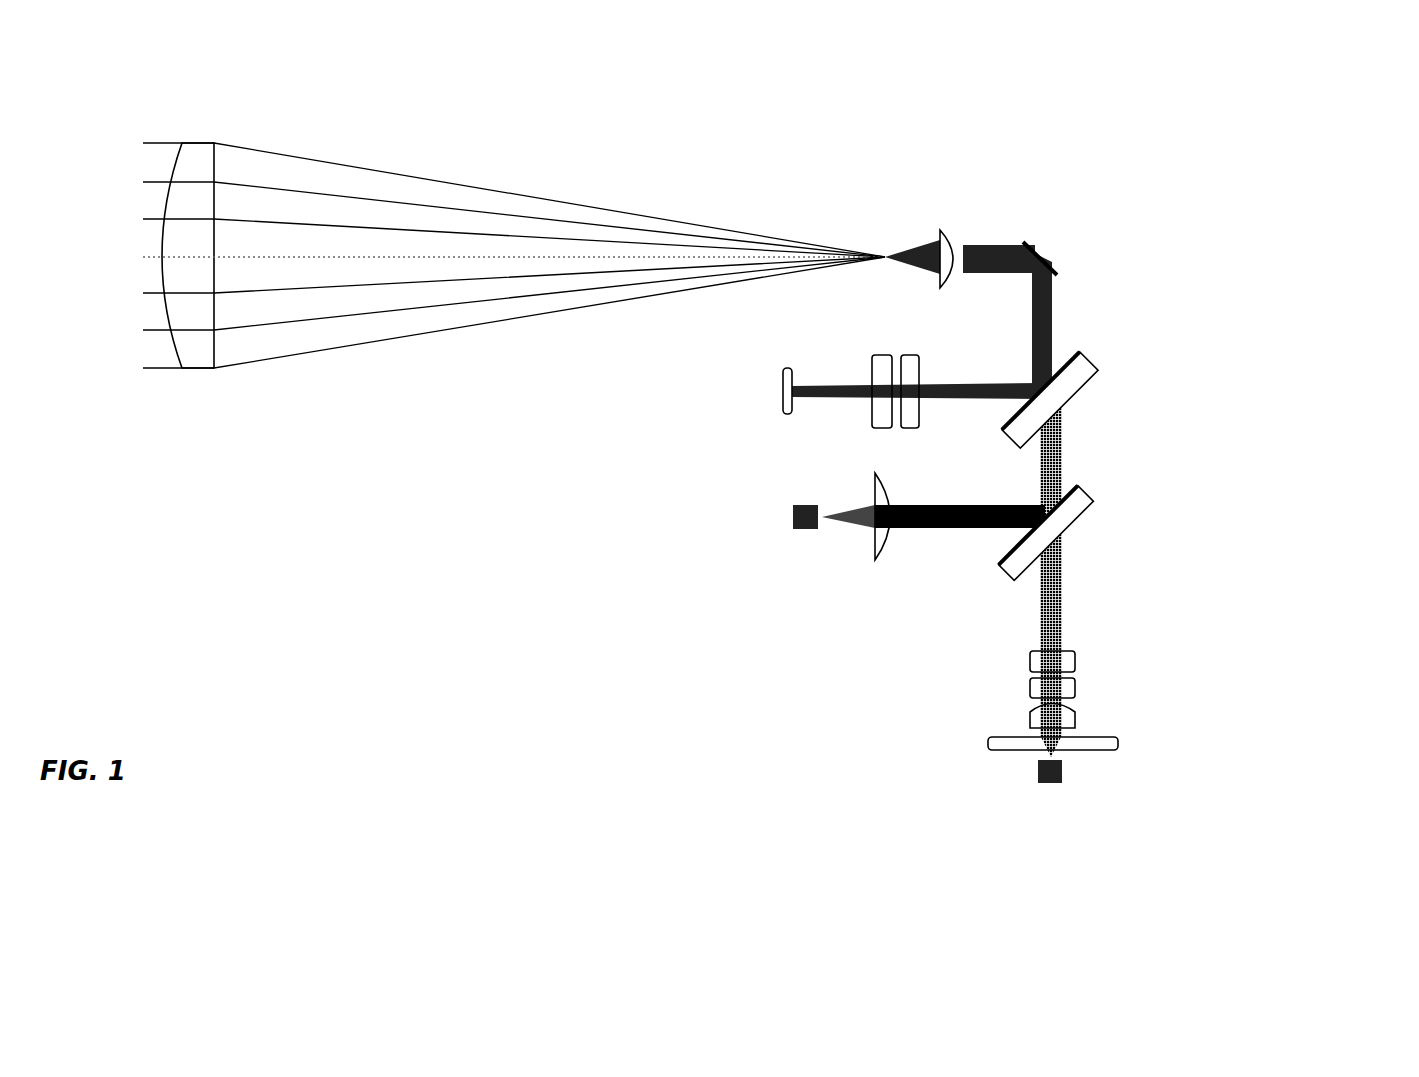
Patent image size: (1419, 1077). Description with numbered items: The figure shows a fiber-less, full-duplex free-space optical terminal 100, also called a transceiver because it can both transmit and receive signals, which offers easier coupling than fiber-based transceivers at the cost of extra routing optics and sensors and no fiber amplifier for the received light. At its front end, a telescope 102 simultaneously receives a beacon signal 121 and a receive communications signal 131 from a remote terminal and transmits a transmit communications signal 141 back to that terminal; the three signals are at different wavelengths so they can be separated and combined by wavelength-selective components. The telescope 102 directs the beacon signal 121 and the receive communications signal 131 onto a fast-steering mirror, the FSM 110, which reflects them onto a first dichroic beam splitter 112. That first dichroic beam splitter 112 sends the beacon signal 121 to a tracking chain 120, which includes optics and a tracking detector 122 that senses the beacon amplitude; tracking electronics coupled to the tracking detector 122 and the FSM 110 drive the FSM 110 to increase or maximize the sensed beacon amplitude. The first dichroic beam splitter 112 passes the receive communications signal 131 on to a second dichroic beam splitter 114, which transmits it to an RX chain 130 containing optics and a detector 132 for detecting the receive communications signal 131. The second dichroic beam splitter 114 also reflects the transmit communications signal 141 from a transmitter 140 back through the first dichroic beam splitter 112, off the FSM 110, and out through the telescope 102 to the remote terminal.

The fiber-less, full-duplex FSO terminal 100 is at (508, 594).
The telescope 102 is at (138, 109).
The FSM 110 is at (1149, 237).
The first dichroic beam splitter 112 is at (1153, 400).
The second dichroic beam splitter 114 is at (1153, 533).
The tracking chain 120 is at (845, 343).
The beacon signal 121 is at (916, 376).
The tracking detector 122 is at (629, 391).
The RX chain 130 is at (1244, 645).
The RX communications signal 131 is at (1081, 577).
The detector 132 is at (1051, 811).
The transmitter 140 is at (665, 519).
The TX communications signal 141 is at (933, 516).